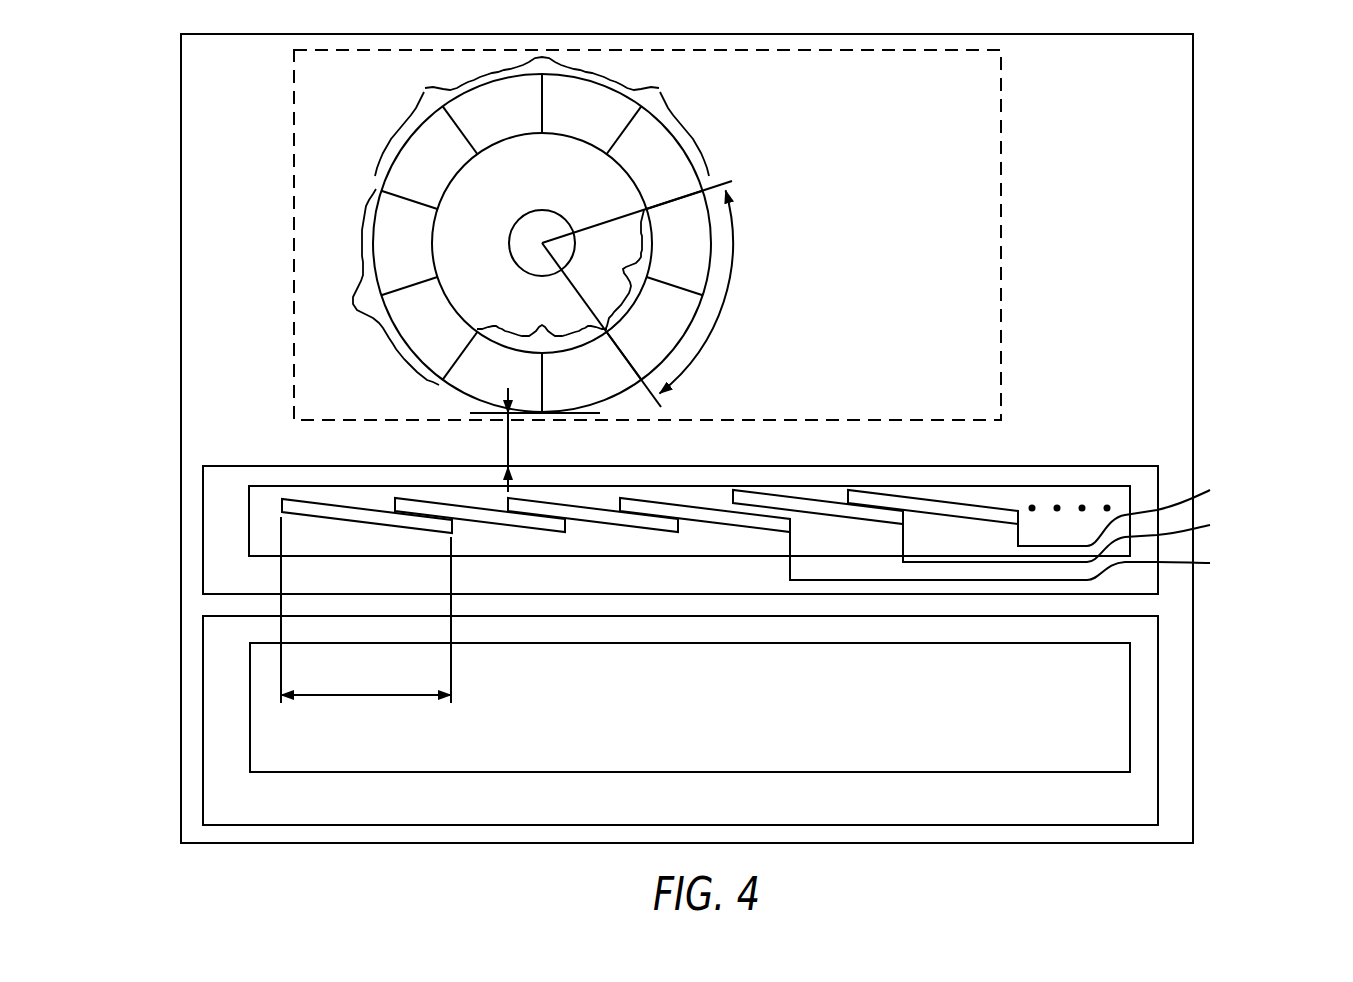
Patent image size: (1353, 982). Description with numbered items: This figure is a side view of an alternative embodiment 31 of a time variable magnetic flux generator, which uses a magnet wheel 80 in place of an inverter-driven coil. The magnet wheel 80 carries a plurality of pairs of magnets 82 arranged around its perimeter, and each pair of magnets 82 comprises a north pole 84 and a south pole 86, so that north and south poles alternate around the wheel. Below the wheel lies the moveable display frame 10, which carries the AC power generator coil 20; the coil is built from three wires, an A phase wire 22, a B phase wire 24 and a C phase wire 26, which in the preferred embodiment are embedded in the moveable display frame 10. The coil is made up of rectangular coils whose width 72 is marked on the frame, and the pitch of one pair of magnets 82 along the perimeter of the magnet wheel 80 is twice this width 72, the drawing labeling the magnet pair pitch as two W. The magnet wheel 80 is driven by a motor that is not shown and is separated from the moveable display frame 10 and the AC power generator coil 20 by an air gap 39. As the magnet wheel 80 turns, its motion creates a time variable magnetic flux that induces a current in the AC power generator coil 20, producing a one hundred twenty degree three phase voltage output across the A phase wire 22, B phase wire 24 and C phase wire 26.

The moveable display frame 10 is at (1128, 473).
The AC power generator coil 20 is at (998, 473).
The A phase wire 22 is at (1174, 509).
The B phase wire 24 is at (1116, 535).
The C phase wire 26 is at (1060, 556).
The alternative embodiment of the TVMFG 31 is at (1001, 145).
The air gap 39 is at (510, 443).
The width of the rectangular coils 72 is at (365, 697).
The magnet wheel 80 is at (720, 167).
The pair of magnets 82 is at (516, 219).
The north pole 84 is at (537, 127).
The south pole 86 is at (614, 137).